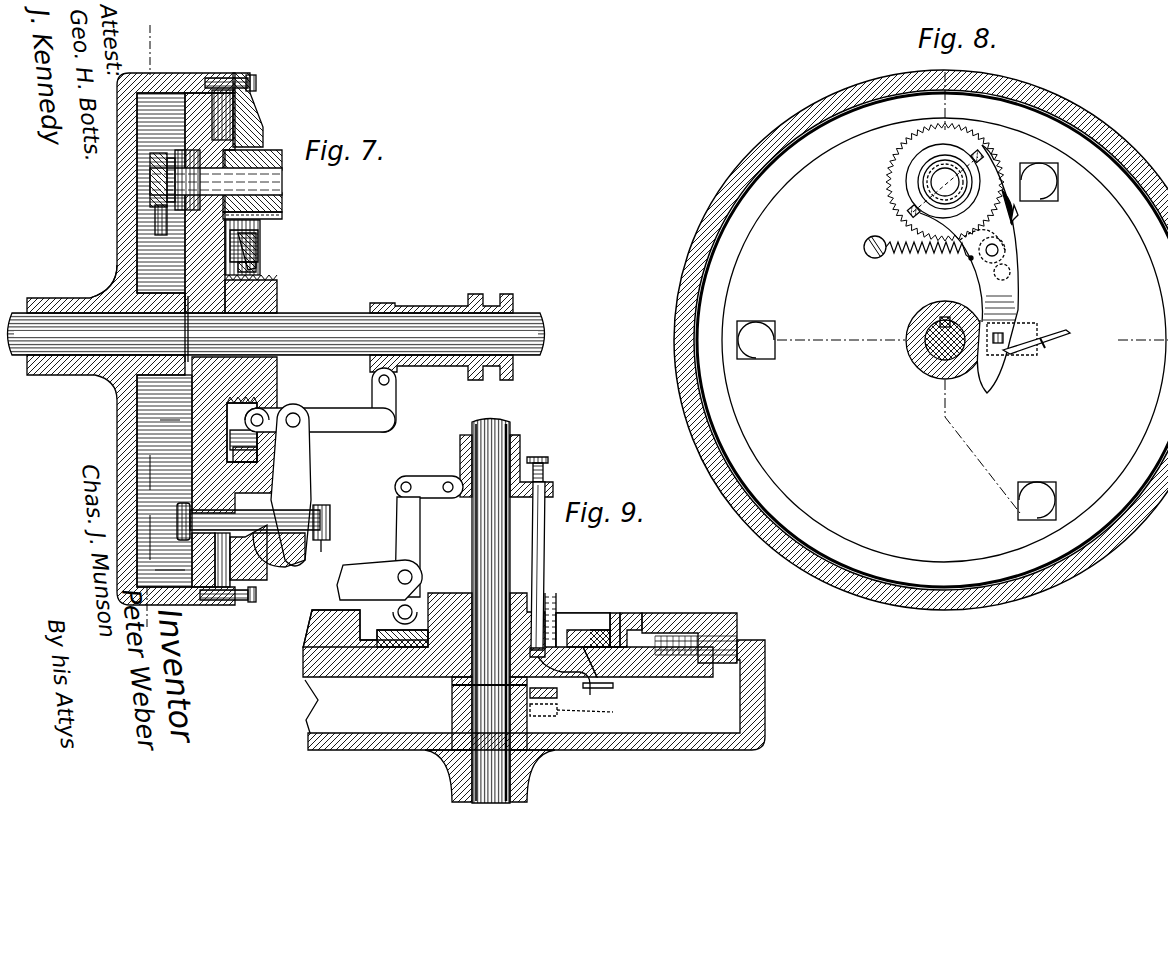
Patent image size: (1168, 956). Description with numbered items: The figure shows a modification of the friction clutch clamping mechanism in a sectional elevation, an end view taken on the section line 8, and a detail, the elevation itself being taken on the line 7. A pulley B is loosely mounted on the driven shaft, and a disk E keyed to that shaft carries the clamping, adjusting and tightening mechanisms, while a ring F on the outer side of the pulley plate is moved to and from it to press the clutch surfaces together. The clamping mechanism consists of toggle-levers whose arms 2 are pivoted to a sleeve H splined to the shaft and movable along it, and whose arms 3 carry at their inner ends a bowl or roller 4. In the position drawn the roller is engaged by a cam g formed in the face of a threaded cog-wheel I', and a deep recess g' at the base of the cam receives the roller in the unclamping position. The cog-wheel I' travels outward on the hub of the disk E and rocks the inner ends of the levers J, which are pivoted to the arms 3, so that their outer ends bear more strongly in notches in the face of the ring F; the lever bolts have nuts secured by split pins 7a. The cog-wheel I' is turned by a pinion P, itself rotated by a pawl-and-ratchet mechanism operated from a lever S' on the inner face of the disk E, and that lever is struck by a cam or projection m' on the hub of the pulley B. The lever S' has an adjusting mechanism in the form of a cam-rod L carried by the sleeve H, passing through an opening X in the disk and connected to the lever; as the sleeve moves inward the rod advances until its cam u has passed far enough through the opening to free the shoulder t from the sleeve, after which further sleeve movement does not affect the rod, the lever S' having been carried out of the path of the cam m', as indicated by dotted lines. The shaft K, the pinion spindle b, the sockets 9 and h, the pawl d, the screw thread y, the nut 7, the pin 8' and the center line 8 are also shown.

In FIG. 7, the pulley B is at (115, 465).
In FIG. 9, the pulley B is at (765, 670).
In FIG. 8, the pulley B is at (708, 228).
In FIG. 7, the disk E is at (278, 292).
In FIG. 9, the disk E is at (683, 678).
In FIG. 7, the ring F is at (262, 112).
In FIG. 9, the ring F is at (685, 613).
In FIG. 7, the pinion P is at (283, 205).
In FIG. 7, the ratchet wheel / spindle b is at (216, 180).
In FIG. 8, the ratchet wheel / spindle b is at (945, 182).
In FIG. 7, the cam g is at (267, 258).
In FIG. 9, the cam g is at (588, 615).
In FIG. 7, the deep recess g' is at (263, 247).
In FIG. 9, the deep recess g' is at (604, 614).
In FIG. 7, the lever S' is at (131, 222).
In FIG. 8, the lever S' is at (956, 257).
In FIG. 7, the cam or projection m' is at (130, 278).
In FIG. 8, the cam or projection m' is at (962, 269).
In FIG. 7, the shaft K is at (276, 327).
In FIG. 9, the shaft K is at (522, 445).
In FIG. 7, the sleeve H is at (514, 304).
In FIG. 7, the arm of toggle-lever 2 is at (384, 400).
In FIG. 9, the arm of toggle-lever 2 is at (429, 487).
In FIG. 7, the arm of toggle-lever 3 is at (320, 420).
In FIG. 9, the arm of toggle-lever 3 is at (407, 547).
In FIG. 7, the bowl or roller 4 is at (262, 410).
In FIG. 9, the bowl or roller 4 is at (393, 610).
In FIG. 7, the lever J is at (282, 485).
In FIG. 9, the lever J is at (379, 580).
In FIG. 7, the split pin 7a is at (318, 505).
In FIG. 7, the cog-wheel I' is at (211, 431).
In FIG. 9, the cog-wheel I' is at (474, 614).
In FIG. 7, the section line 8 is at (154, 324).
In FIG. 8, the nut 7 is at (1115, 578).
In FIG. 8, the square socket 9 is at (771, 340).
In FIG. 8, the square socket h is at (1040, 203).
In FIG. 8, the pawl d is at (986, 147).
In FIG. 9, the opening X is at (530, 592).
In FIG. 9, the shoulder t is at (547, 482).
In FIG. 9, the screw thread y is at (560, 482).
In FIG. 9, the cam-rod L is at (545, 550).
In FIG. 9, the cam u is at (546, 575).
In FIG. 9, the crank pin 8' is at (571, 695).